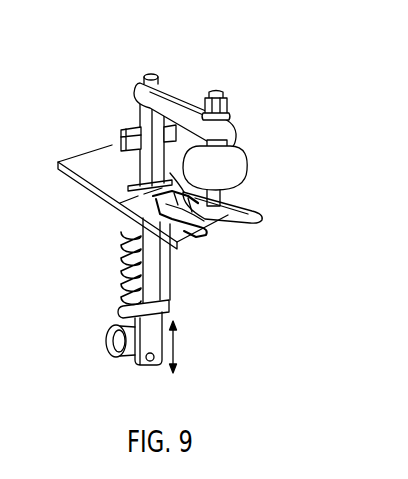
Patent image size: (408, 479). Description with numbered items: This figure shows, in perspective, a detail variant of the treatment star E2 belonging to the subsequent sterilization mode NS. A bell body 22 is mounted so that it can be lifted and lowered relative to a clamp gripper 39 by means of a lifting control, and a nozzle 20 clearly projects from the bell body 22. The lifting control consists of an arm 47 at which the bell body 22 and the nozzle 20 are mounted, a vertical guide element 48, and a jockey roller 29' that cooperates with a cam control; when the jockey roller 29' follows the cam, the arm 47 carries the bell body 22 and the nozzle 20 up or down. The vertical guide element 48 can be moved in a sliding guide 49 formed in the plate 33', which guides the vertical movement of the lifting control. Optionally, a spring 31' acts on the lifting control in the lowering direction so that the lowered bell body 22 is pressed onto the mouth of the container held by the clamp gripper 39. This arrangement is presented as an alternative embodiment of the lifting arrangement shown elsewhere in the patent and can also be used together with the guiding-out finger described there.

The subsequent sterilization mode NS is at (82, 129).
The arm 47 is at (182, 110).
The bell body 22 is at (238, 153).
The nozzle 20 is at (223, 185).
The plate 33' is at (240, 205).
The clamp gripper 39 is at (187, 236).
The vertical guide element 48 is at (148, 172).
The treatment star E2 is at (65, 184).
The sliding guide 49 is at (140, 208).
The spring 31' is at (105, 270).
The jockey roller 29' is at (106, 358).